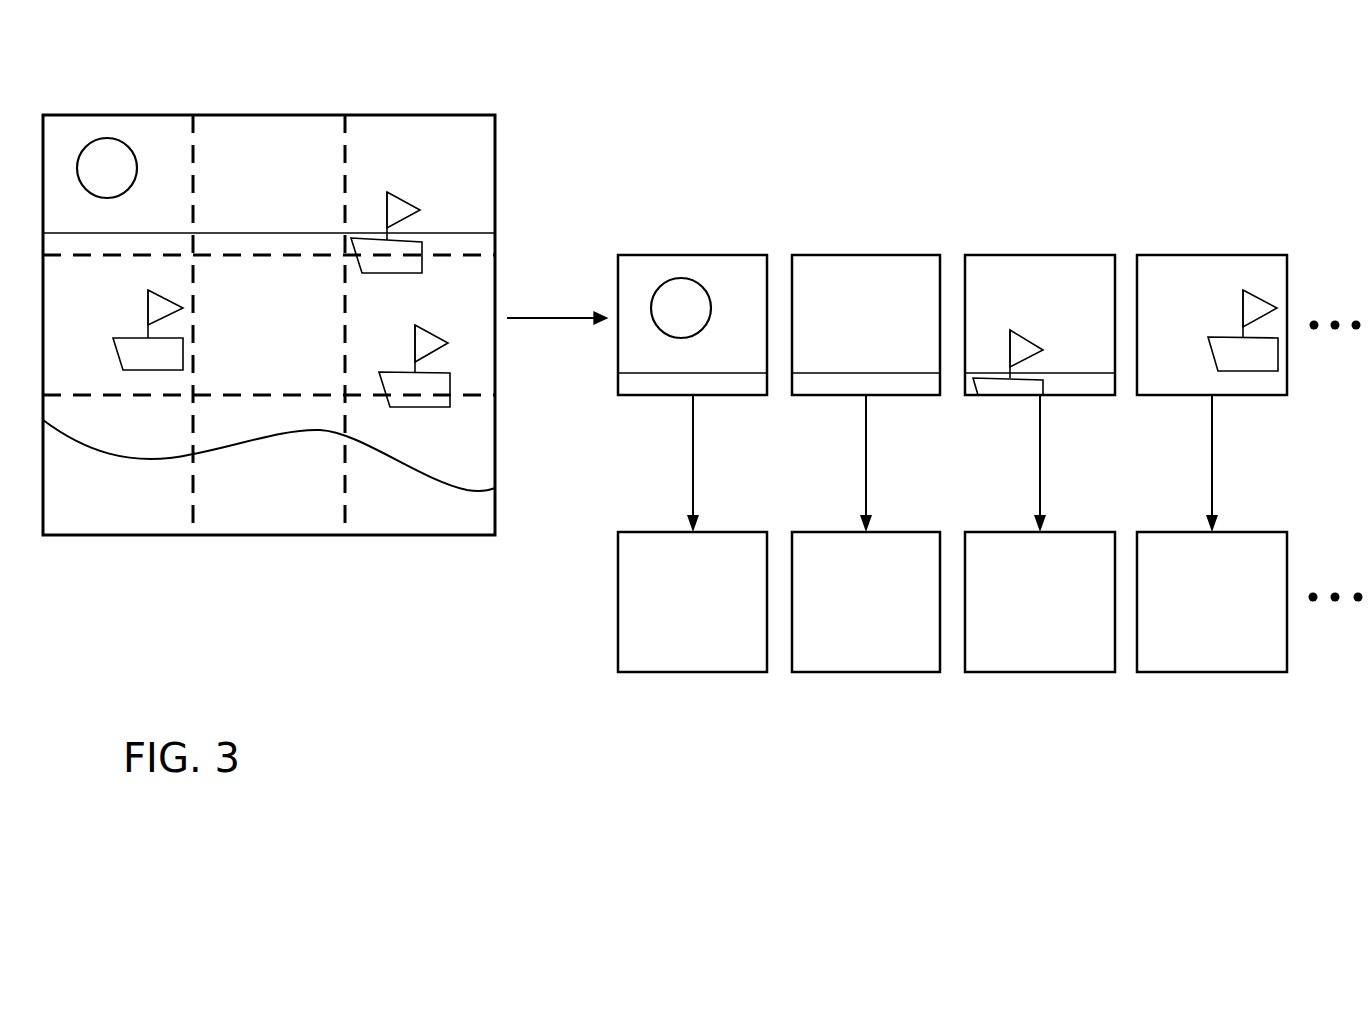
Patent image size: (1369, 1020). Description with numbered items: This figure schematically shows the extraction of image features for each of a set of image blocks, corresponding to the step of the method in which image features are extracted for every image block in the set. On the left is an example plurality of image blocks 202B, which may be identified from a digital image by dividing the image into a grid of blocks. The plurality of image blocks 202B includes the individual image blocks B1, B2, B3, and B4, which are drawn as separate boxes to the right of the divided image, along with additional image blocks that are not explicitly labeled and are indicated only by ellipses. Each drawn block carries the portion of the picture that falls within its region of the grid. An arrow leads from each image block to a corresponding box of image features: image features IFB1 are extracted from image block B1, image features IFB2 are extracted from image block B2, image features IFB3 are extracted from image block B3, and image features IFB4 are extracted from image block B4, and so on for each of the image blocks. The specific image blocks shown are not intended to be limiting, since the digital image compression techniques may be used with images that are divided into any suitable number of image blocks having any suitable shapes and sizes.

The plurality of image blocks 202B is at (268, 535).
The image block B1 is at (727, 255).
The image block B2 is at (907, 255).
The image block B3 is at (1082, 255).
The image block B4 is at (1247, 255).
The image features IFB1 is at (695, 672).
The image features IFB2 is at (869, 672).
The image features IFB3 is at (1042, 672).
The image features IFB4 is at (1215, 672).